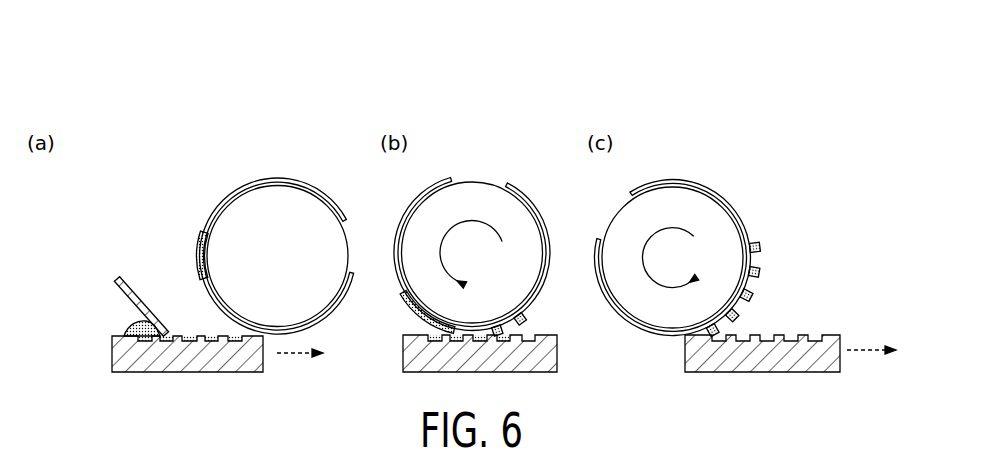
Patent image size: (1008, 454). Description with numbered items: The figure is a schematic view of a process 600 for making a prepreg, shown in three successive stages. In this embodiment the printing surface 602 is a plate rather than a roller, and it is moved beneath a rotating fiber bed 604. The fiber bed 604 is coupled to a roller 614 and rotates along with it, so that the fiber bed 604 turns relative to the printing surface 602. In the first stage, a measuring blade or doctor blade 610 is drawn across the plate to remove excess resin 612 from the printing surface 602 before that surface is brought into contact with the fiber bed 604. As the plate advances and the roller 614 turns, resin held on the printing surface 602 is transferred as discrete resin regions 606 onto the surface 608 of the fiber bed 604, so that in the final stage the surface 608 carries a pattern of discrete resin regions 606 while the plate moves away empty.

The process 600 is at (632, 97).
The printing surface 602 is at (205, 334).
The fiber bed 604 is at (200, 243).
The discrete resin regions 606 is at (760, 247).
The surface of the fiber bed 608 is at (192, 270).
The doctor blade 610 is at (115, 280).
The excess resin 612 is at (123, 331).
The roller 614 is at (349, 240).